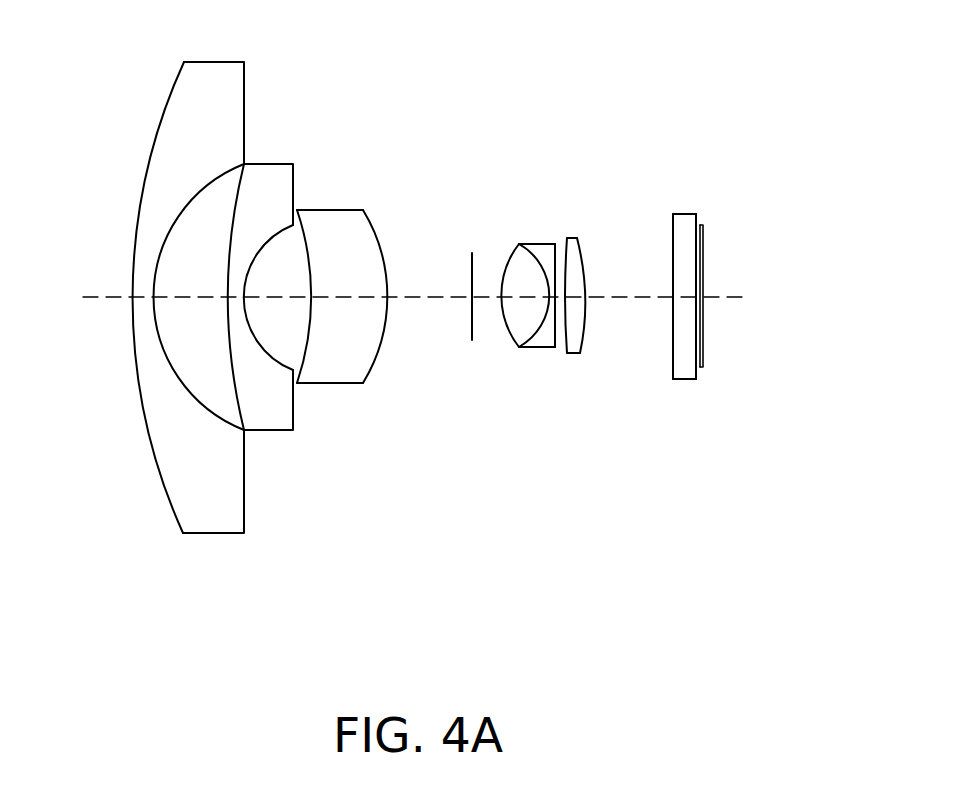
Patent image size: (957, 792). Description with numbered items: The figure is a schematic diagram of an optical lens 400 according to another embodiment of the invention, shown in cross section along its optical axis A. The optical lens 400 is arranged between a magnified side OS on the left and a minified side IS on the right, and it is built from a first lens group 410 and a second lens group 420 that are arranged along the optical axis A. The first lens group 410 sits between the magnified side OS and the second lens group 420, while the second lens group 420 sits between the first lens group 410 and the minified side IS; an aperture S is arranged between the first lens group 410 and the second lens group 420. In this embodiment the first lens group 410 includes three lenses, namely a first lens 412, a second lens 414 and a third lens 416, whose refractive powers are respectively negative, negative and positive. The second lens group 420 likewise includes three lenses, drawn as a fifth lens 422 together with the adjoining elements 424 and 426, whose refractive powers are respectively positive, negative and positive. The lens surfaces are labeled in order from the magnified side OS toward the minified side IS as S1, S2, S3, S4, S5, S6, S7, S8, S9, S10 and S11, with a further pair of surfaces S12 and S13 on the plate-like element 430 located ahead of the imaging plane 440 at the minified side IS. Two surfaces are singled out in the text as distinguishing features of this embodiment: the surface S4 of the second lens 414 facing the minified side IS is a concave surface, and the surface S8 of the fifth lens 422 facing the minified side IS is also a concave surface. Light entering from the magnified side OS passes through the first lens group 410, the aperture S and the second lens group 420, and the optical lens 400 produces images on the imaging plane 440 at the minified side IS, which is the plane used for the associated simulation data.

The optical lens 400 is at (411, 319).
The first lens group 410 is at (256, 317).
The first lens 412 is at (192, 300).
The second lens 414 is at (285, 293).
The third lens 416 is at (358, 357).
The second lens group 420 is at (553, 340).
The fifth lens 422 is at (508, 326).
The fifth lens 424 is at (555, 323).
The sixth lens 426 is at (601, 315).
The filter 430 is at (668, 308).
The imaging plane 440 is at (728, 278).
The aperture S is at (471, 322).
The optical axis A is at (93, 300).
The magnified side OS is at (60, 300).
The minified side IS is at (765, 300).
The object-side surface of first lens S1 is at (168, 103).
The image-side surface of first lens S2 is at (175, 243).
The object-side surface of second lens S3 is at (217, 206).
The surface of the second lens facing the minified side S4 is at (257, 258).
The object-side surface of third lens S5 is at (310, 268).
The image-side surface of third lens S6 is at (382, 243).
The object-side surface of fourth lens S7 is at (502, 284).
The surface of the fifth lens facing the minified side S8 is at (535, 267).
The image-side surface of fifth lens S9 is at (556, 263).
The object-side surface of sixth lens S10 is at (565, 265).
The image-side surface of sixth lens S11 is at (583, 247).
The object-side surface of filter S12 is at (672, 218).
The image-side surface of filter S13 is at (701, 219).